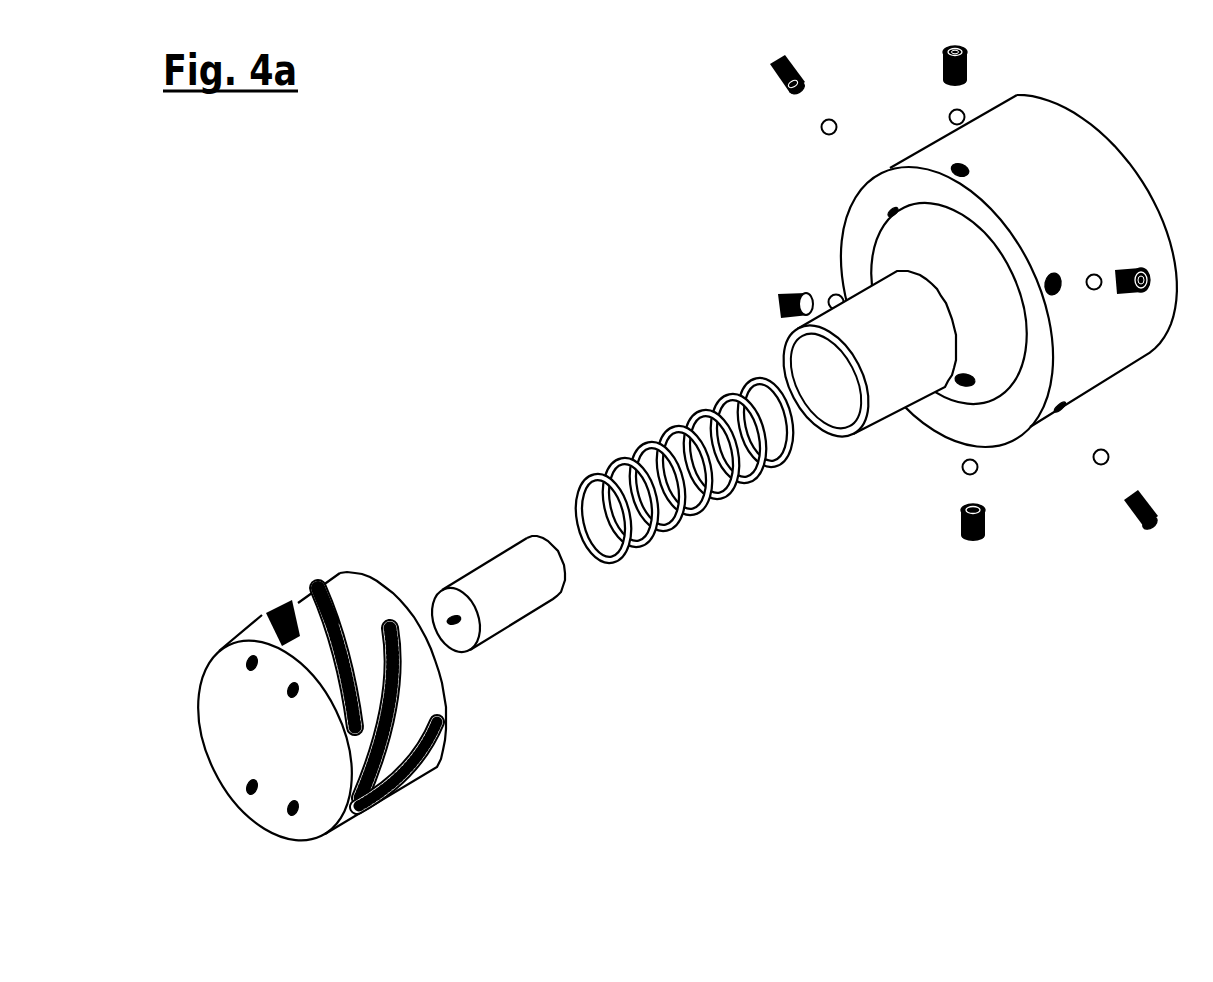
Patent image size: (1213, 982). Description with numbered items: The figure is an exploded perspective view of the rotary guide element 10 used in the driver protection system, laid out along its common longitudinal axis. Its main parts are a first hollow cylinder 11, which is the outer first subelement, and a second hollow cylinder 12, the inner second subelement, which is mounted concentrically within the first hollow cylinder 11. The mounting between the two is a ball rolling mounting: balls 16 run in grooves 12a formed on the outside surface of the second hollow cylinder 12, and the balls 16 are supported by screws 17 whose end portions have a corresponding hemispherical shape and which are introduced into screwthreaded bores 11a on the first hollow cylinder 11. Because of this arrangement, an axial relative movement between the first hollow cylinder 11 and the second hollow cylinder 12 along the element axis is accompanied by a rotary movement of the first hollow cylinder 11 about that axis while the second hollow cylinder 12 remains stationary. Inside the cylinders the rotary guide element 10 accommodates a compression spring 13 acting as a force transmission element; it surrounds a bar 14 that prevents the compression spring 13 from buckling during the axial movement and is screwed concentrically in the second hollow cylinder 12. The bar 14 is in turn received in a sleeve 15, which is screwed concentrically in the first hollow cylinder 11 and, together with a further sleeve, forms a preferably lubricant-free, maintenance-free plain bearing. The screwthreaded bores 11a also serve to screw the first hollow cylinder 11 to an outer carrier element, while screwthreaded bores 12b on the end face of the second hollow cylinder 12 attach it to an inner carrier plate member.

The rotary guide element 10 is at (559, 315).
The first hollow cylinder 11 is at (1090, 209).
The screwthreaded bores 11a is at (968, 176).
The second hollow cylinder 12 is at (250, 625).
The grooves 12a is at (391, 620).
The screwthreaded bores 12b is at (291, 694).
The compression spring 13 is at (690, 514).
The bar 14 is at (515, 607).
The sleeve 15 is at (884, 402).
The balls 16 is at (837, 128).
The screws 17 is at (806, 75).